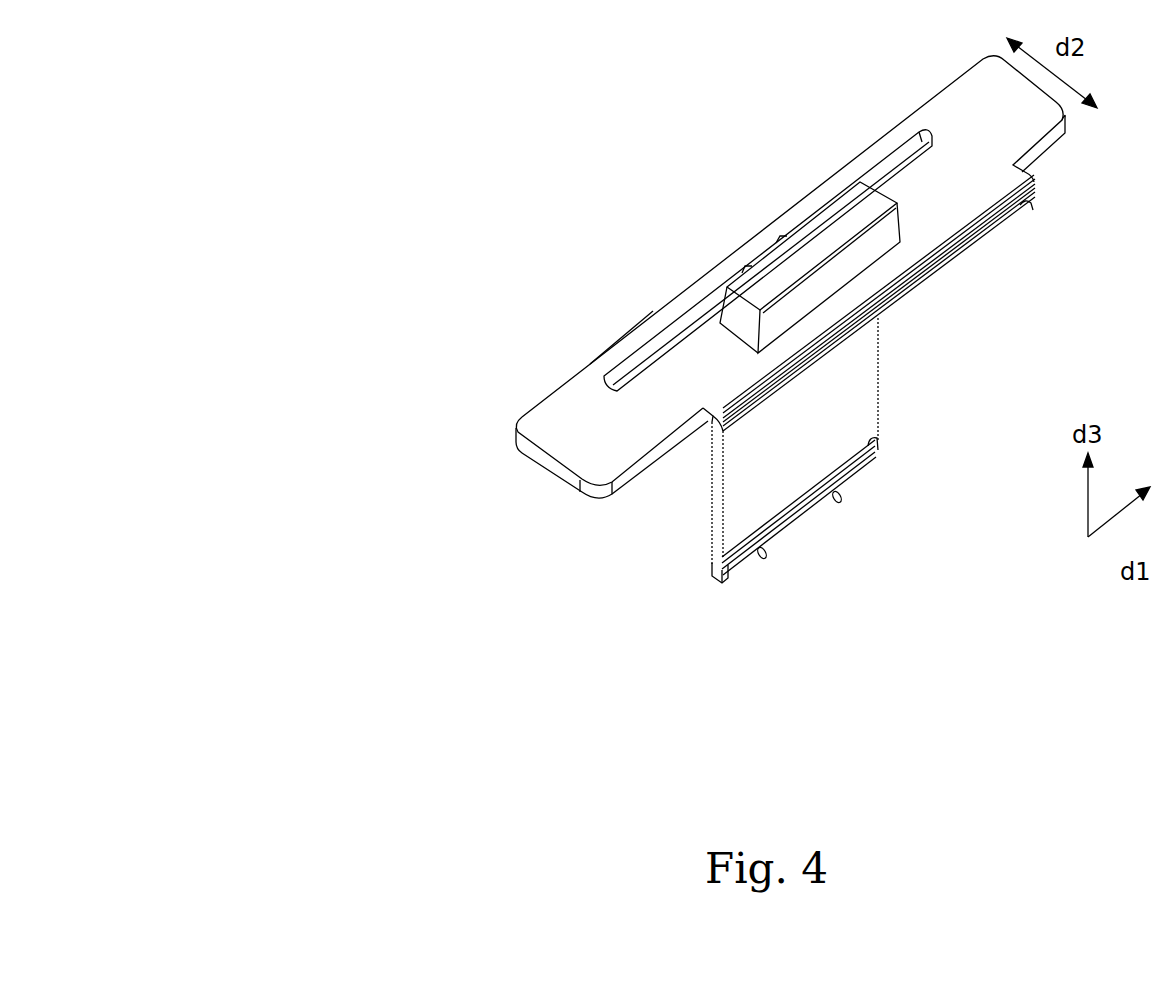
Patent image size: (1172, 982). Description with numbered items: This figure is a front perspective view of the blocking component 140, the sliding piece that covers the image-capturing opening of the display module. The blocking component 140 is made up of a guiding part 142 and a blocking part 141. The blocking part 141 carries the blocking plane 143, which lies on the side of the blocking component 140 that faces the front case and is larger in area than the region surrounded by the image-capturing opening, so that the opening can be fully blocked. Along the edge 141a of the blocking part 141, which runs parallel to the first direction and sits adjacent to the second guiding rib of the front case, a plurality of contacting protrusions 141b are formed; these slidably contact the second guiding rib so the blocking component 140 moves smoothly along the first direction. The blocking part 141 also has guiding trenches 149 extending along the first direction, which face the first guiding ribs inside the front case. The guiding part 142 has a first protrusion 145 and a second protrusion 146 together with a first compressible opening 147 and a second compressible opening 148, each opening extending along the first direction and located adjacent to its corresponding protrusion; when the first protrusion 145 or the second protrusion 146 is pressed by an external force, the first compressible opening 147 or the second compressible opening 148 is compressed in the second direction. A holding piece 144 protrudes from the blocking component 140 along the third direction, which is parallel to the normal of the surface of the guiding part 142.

The blocking component 140 is at (676, 363).
The blocking part 141 is at (870, 413).
The edge of the blocking part 141a is at (797, 532).
The contacting protrusions 141b is at (843, 497).
The guiding part 142 is at (538, 428).
The blocking plane 143 is at (790, 482).
The holding piece 144 is at (868, 250).
The first protrusion 145 is at (710, 256).
The second protrusion 146 is at (648, 312).
The first compressible opening 147 is at (917, 137).
The second compressible opening 148 is at (618, 367).
The guiding trenches 149 is at (718, 443).